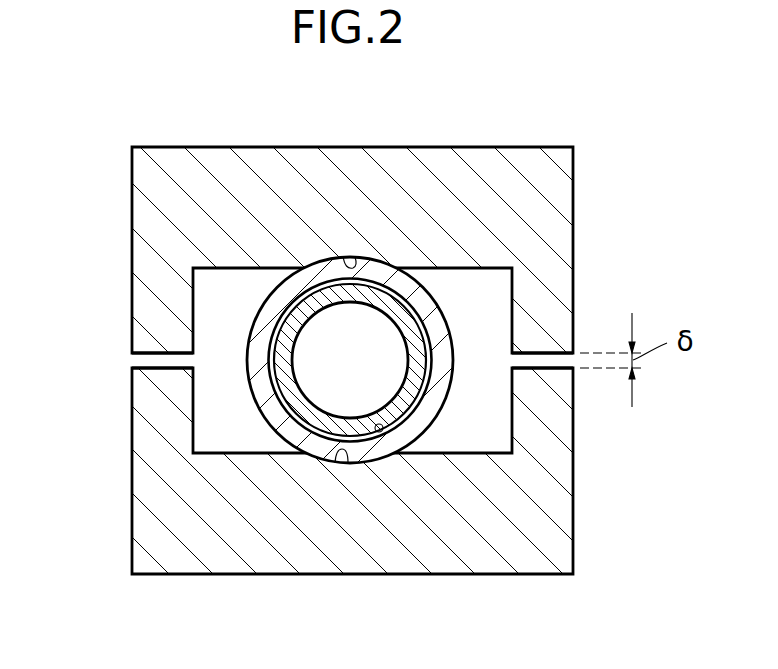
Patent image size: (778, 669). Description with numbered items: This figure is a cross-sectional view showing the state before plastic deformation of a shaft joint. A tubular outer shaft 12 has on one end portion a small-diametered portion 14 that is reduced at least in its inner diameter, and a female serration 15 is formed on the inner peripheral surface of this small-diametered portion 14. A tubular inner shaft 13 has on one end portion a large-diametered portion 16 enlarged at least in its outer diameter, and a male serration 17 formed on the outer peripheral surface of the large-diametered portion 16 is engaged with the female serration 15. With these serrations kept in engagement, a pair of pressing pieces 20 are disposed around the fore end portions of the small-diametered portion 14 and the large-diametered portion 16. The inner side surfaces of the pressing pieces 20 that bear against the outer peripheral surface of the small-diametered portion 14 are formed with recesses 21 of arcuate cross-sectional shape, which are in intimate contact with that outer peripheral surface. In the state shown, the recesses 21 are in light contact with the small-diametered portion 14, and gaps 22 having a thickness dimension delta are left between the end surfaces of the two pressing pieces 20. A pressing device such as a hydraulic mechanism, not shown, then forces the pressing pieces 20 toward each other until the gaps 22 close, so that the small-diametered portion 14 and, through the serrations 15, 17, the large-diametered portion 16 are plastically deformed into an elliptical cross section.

The tubular outer shaft 12 is at (402, 282).
The tubular inner shaft 13 is at (310, 450).
The small-diametered portion 14 is at (442, 327).
The female serration 15 is at (382, 440).
The large-diametered portion 16 is at (313, 300).
The male serration 17 is at (398, 428).
The pressing pieces 20 is at (145, 228).
The recesses 21 is at (342, 257).
The gaps 22 is at (138, 362).